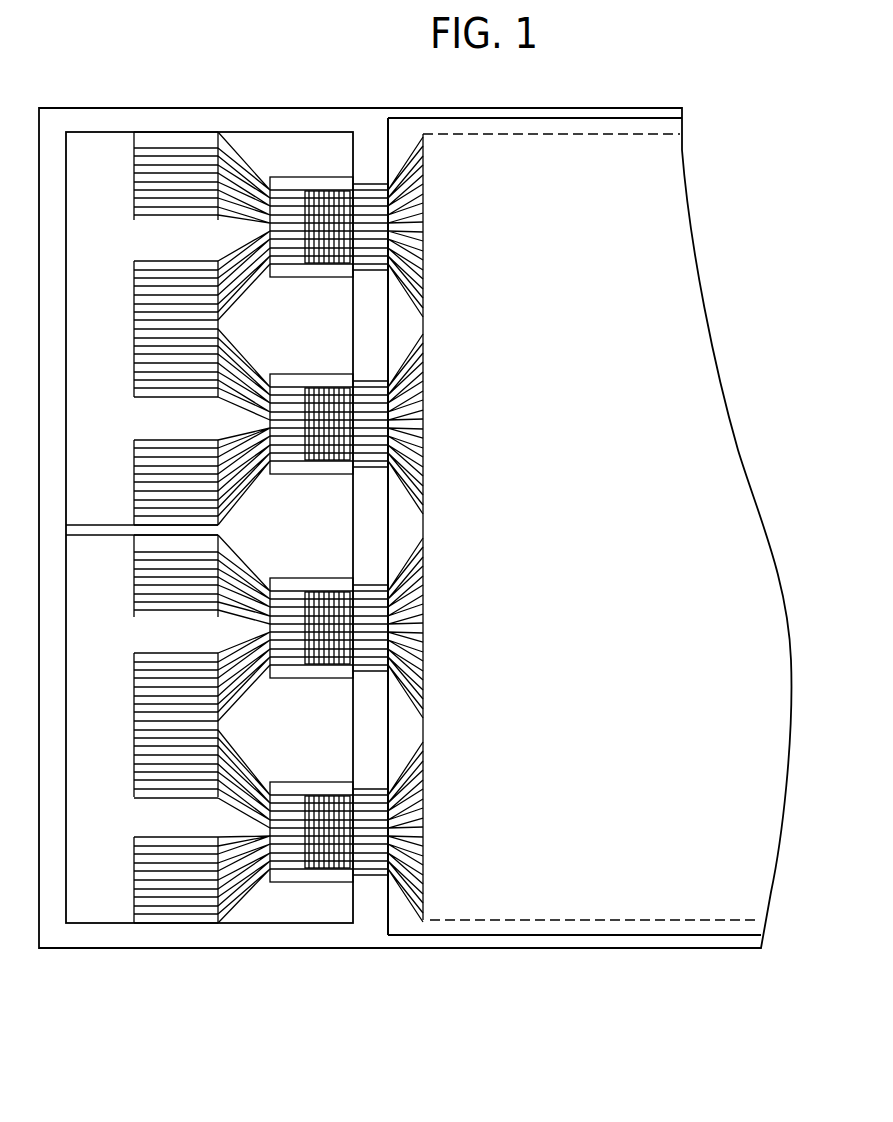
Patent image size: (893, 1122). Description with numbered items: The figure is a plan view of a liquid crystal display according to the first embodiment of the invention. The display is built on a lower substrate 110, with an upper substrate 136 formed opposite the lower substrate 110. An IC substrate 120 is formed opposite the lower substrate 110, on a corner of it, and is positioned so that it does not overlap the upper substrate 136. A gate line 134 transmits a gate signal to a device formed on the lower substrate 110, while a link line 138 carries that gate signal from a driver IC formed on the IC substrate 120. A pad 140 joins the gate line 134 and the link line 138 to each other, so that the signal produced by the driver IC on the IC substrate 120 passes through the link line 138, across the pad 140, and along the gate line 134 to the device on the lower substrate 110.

The lower substrate 110 is at (633, 950).
The IC substrate 120 is at (98, 923).
The gate line 134 is at (403, 905).
The upper substrate 136 is at (528, 935).
The link line 138 is at (233, 923).
The pad 140 is at (315, 857).